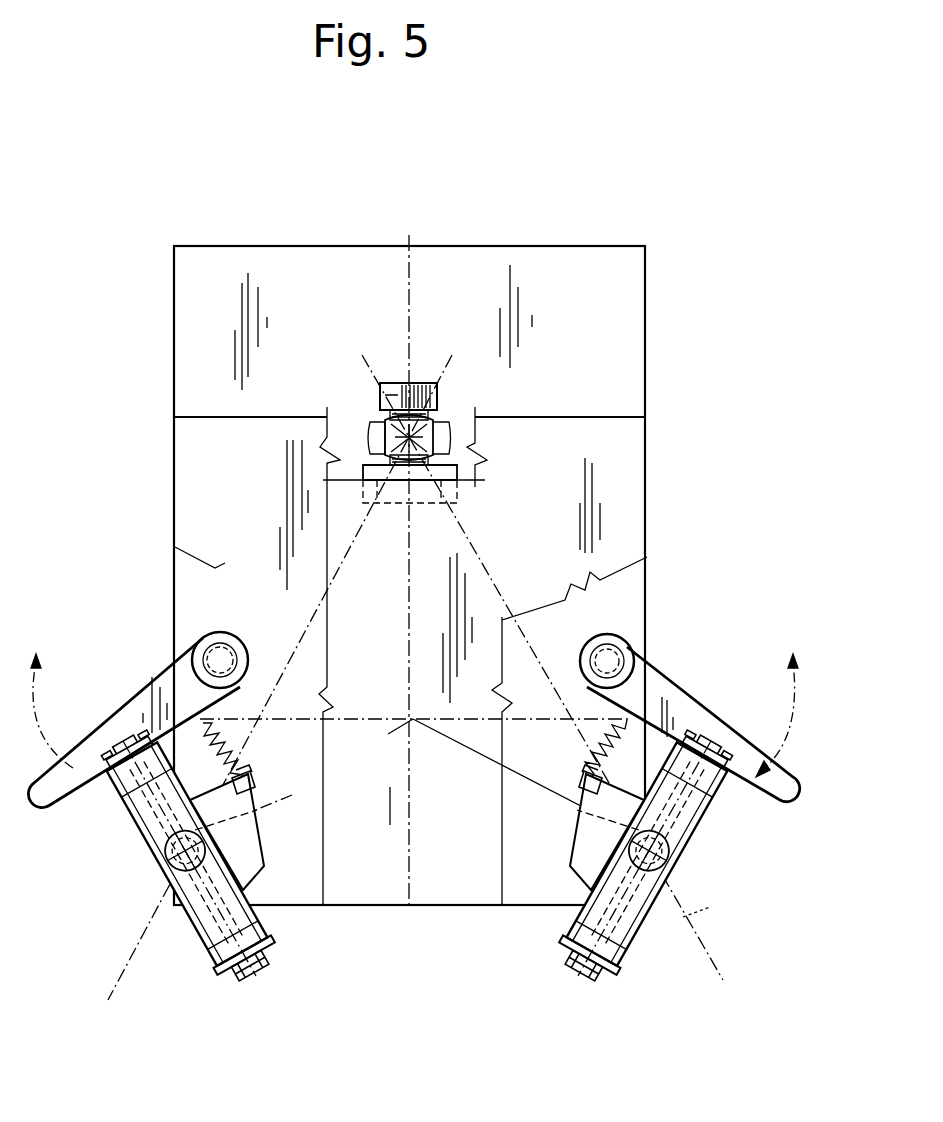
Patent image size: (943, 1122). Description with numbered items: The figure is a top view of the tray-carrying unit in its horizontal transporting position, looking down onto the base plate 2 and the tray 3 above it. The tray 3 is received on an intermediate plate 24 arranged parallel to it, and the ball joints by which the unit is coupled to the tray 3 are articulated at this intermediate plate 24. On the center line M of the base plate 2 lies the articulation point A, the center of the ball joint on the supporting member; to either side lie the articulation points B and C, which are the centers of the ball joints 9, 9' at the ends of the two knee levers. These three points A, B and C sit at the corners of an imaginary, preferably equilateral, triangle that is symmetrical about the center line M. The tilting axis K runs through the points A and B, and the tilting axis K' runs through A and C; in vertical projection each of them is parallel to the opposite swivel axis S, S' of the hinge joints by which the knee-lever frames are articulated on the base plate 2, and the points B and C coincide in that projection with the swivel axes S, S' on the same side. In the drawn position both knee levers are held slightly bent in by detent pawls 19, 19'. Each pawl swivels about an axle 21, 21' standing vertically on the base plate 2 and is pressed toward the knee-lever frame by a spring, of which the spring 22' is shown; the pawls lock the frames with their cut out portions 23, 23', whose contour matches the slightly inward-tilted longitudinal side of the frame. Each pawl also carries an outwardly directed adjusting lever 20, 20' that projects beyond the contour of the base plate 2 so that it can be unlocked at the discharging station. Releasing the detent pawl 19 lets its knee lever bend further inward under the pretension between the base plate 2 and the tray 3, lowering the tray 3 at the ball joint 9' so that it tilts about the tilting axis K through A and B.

The base plate 2 is at (625, 292).
The tray 3 is at (612, 458).
The center line M is at (405, 246).
The articulation point A is at (423, 387).
The intermediate plate 24 is at (448, 431).
The detent pawl 19 is at (134, 721).
The axle 21 is at (194, 641).
The adjusting lever 20 is at (54, 760).
The cut out portion 23 is at (108, 726).
The ball joint 9 is at (144, 860).
The articulation point B is at (165, 878).
The tilting axis K is at (256, 696).
The swivel axis S is at (240, 995).
The detent pawl 19' is at (693, 719).
The axle 21' is at (644, 639).
The adjusting lever 20' is at (797, 717).
The cut out portion 23' is at (721, 722).
The spring 22' is at (686, 827).
The ball joint 9' is at (692, 857).
The articulation point C is at (709, 920).
The tilting axis K' is at (575, 681).
The swivel axis S' is at (603, 988).